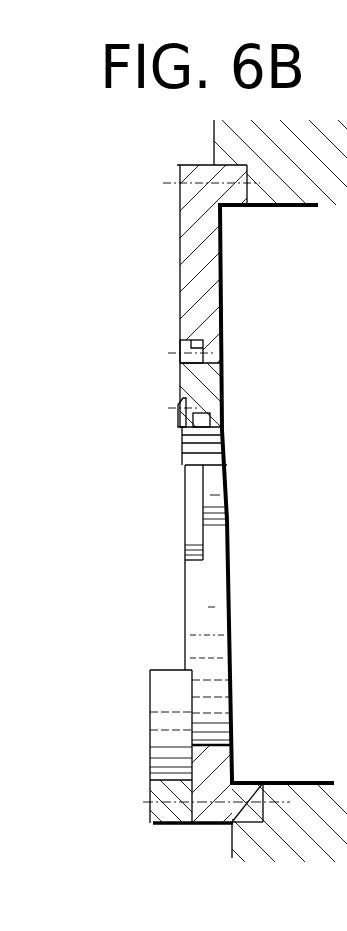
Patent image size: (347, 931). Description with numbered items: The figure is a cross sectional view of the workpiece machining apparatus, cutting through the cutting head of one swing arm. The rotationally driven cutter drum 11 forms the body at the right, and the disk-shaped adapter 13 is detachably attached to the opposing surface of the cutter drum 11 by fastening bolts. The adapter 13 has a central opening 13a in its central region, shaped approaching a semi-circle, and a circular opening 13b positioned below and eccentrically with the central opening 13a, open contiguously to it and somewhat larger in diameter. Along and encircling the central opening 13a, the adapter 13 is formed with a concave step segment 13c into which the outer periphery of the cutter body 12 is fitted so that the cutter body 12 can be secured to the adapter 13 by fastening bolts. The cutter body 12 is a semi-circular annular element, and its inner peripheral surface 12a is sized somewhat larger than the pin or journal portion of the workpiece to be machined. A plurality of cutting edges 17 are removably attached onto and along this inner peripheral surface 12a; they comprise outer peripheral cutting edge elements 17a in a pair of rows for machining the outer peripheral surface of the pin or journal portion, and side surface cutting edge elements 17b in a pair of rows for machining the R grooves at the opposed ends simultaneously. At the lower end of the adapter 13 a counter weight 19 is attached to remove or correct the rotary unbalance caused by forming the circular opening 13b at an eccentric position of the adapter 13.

The cutter drum 11 is at (283, 175).
The cutter body 12 is at (223, 373).
The inner peripheral surface 12a is at (222, 413).
The adapter 13 is at (192, 262).
The central opening 13a is at (190, 542).
The circular opening 13b is at (212, 653).
The concave step segment 13c is at (202, 345).
The cutting edges 17 is at (302, 420).
The outer peripheral cutting edge elements 17a is at (222, 435).
The side surface cutting edge elements 17b is at (185, 431).
The counter weight 19 is at (180, 798).